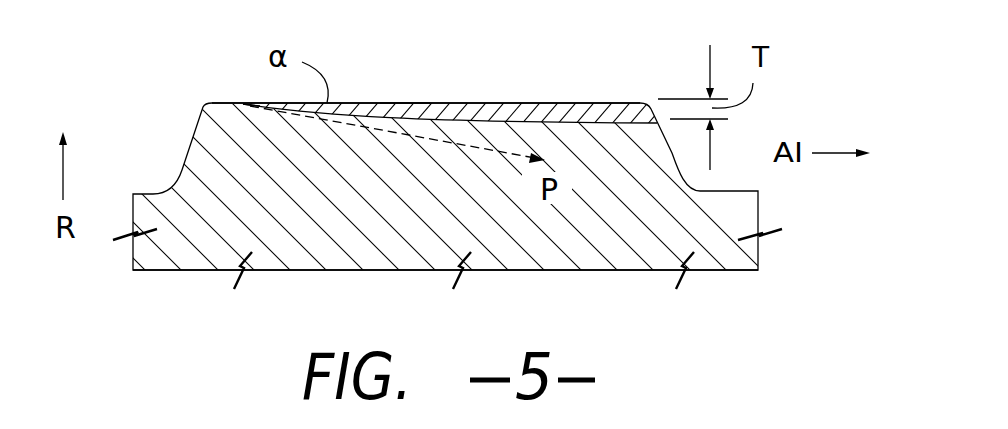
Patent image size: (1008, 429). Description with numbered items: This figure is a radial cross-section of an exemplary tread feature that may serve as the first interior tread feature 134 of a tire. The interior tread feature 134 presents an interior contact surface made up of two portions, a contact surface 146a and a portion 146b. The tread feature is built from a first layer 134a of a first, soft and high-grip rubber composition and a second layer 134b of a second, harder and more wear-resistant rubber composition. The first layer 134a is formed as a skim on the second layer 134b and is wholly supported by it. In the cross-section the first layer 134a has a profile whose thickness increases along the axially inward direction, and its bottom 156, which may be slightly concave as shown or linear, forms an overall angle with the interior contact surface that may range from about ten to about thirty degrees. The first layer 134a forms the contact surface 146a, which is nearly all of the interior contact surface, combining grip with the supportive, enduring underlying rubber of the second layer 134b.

The first interior tread feature 134 is at (217, 150).
The first layer 134a is at (527, 110).
The second layer 134b is at (202, 240).
The contact surface 146a is at (403, 96).
The portion of interior contact surface 146b is at (246, 98).
The bottom 156 is at (608, 127).